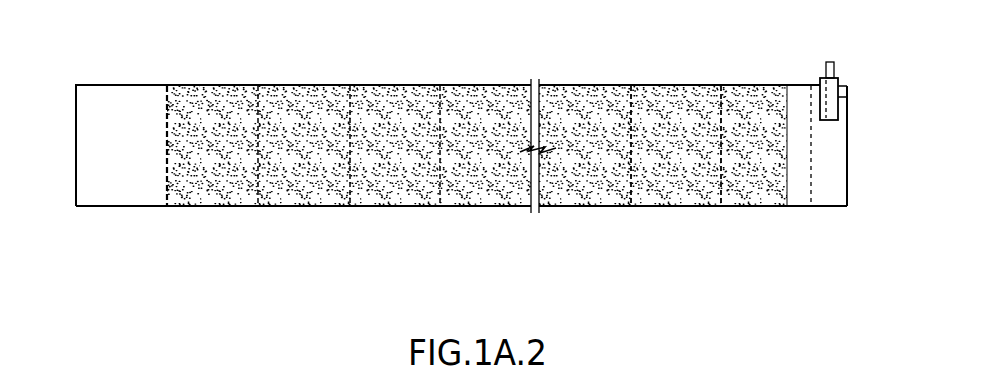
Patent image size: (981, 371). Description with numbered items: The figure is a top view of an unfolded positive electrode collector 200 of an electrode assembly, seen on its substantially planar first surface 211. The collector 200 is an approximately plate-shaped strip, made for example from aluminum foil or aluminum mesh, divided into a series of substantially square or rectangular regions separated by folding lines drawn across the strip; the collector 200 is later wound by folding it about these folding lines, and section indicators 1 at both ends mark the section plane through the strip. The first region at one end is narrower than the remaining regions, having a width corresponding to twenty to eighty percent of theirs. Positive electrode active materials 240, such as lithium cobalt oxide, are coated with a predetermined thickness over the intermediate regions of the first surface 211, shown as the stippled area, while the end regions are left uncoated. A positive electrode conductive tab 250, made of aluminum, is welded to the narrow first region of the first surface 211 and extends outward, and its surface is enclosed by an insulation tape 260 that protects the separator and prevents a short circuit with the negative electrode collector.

The section line indicator 1 is at (53, 141).
The positive electrode collector 200 is at (848, 193).
The first surface 211 is at (835, 170).
The positive electrode active materials 240 is at (581, 93).
The positive electrode conductive tab 250 is at (833, 60).
The insulation tape 260 is at (838, 97).